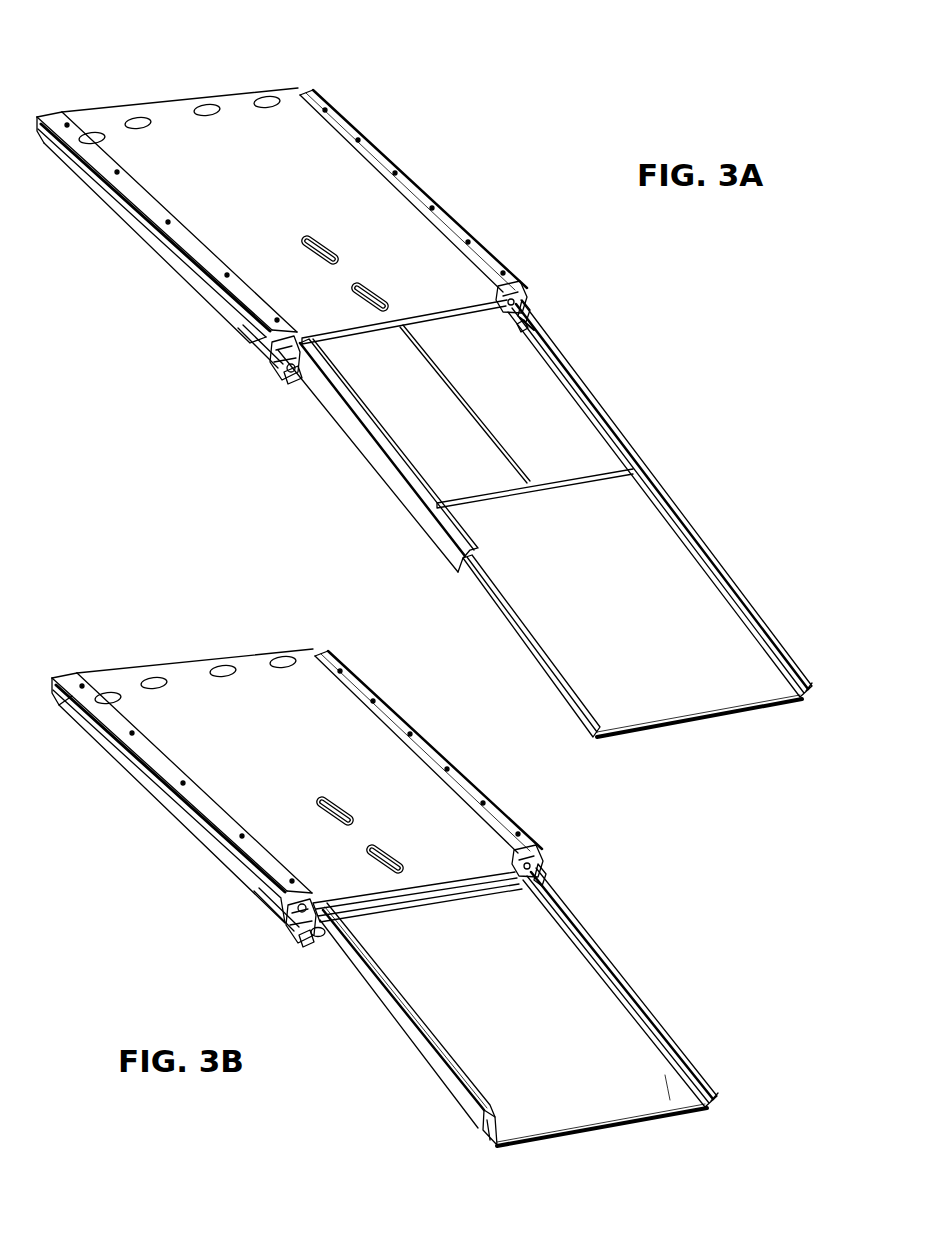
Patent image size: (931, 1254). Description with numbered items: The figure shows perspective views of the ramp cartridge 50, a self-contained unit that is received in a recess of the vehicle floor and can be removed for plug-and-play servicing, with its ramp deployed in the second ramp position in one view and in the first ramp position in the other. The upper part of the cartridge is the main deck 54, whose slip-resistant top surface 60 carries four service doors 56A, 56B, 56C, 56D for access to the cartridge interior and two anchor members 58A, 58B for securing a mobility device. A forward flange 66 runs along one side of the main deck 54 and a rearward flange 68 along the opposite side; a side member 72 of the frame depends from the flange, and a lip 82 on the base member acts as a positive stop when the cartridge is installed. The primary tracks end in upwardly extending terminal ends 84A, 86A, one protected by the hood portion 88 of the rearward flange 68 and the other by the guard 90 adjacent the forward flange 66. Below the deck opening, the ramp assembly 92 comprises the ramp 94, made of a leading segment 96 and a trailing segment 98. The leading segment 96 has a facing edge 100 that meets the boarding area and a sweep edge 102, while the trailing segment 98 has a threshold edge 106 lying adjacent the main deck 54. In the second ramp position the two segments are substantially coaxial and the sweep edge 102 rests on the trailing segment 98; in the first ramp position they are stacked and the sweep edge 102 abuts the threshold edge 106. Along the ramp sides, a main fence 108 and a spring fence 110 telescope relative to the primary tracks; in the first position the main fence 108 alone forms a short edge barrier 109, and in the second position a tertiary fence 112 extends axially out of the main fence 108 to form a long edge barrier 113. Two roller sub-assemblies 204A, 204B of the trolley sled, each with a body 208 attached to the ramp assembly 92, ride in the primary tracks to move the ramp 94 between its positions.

In FIG. 3A, the ramp cartridge 50 is at (405, 157).
In FIG. 3B, the ramp cartridge 50 is at (148, 862).
In FIG. 3A, the main deck 54 is at (182, 92).
In FIG. 3B, the main deck 54 is at (197, 652).
In FIG. 3A, the service door 56A is at (267, 97).
In FIG. 3B, the service door 56A is at (283, 657).
In FIG. 3A, the service door 56B is at (206, 105).
In FIG. 3B, the service door 56B is at (223, 665).
In FIG. 3A, the service door 56C is at (137, 118).
In FIG. 3B, the service door 56C is at (153, 678).
In FIG. 3A, the service door 56D is at (90, 132).
In FIG. 3B, the service door 56D is at (107, 692).
In FIG. 3A, the anchor member 58A is at (330, 256).
In FIG. 3B, the anchor member 58A is at (345, 819).
In FIG. 3A, the anchor member 58B is at (380, 300).
In FIG. 3B, the anchor member 58B is at (395, 863).
In FIG. 3A, the top surface 60 is at (296, 92).
In FIG. 3B, the top surface 60 is at (312, 652).
In FIG. 3A, the forward flange 66 is at (348, 120).
In FIG. 3B, the forward flange 66 is at (383, 703).
In FIG. 3B, the rearward flange 68 is at (97, 705).
In FIG. 3B, the side member 72 is at (128, 765).
In FIG. 3B, the lip 82 is at (305, 940).
In FIG. 3A, the upwardly extending terminal end 84A is at (276, 348).
In FIG. 3B, the upwardly extending terminal end 84A is at (292, 915).
In FIG. 3A, the upwardly extending terminal end 86A is at (530, 303).
In FIG. 3B, the upwardly extending terminal end 86A is at (543, 880).
In FIG. 3B, the hood portion 88 is at (283, 893).
In FIG. 3A, the guard 90 is at (516, 290).
In FIG. 3B, the guard 90 is at (530, 852).
In FIG. 3A, the ramp assembly 92 is at (650, 402).
In FIG. 3B, the ramp assembly 92 is at (690, 1018).
In FIG. 3A, the ramp 94 is at (643, 442).
In FIG. 3B, the ramp 94 is at (648, 995).
In FIG. 3A, the leading segment 96 is at (742, 655).
In FIG. 3B, the leading segment 96 is at (660, 1092).
In FIG. 3A, the trailing segment 98 is at (405, 441).
In FIG. 3A, the facing edge 100 is at (708, 732).
In FIG. 3B, the facing edge 100 is at (598, 1120).
In FIG. 3A, the sweep edge 102 is at (455, 495).
In FIG. 3A, the threshold edge 106 is at (300, 382).
In FIG. 3A, the main fence 108 is at (418, 473).
In FIG. 3B, the main fence 108 is at (405, 1037).
In FIG. 3B, the short edge barrier 109 is at (362, 1000).
In FIG. 3A, the spring fence 110 is at (732, 588).
In FIG. 3B, the spring fence 110 is at (600, 955).
In FIG. 3A, the tertiary fence 112 is at (472, 584).
In FIG. 3B, the tertiary fence 112 is at (486, 1142).
In FIG. 3A, the long edge barrier 113 is at (462, 574).
In FIG. 3A, the roller sub-assembly 204A is at (538, 325).
In FIG. 3A, the roller sub-assembly 204B is at (282, 387).
In FIG. 3A, the body 208 is at (528, 322).
In FIG. 3B, the body 208 is at (320, 948).